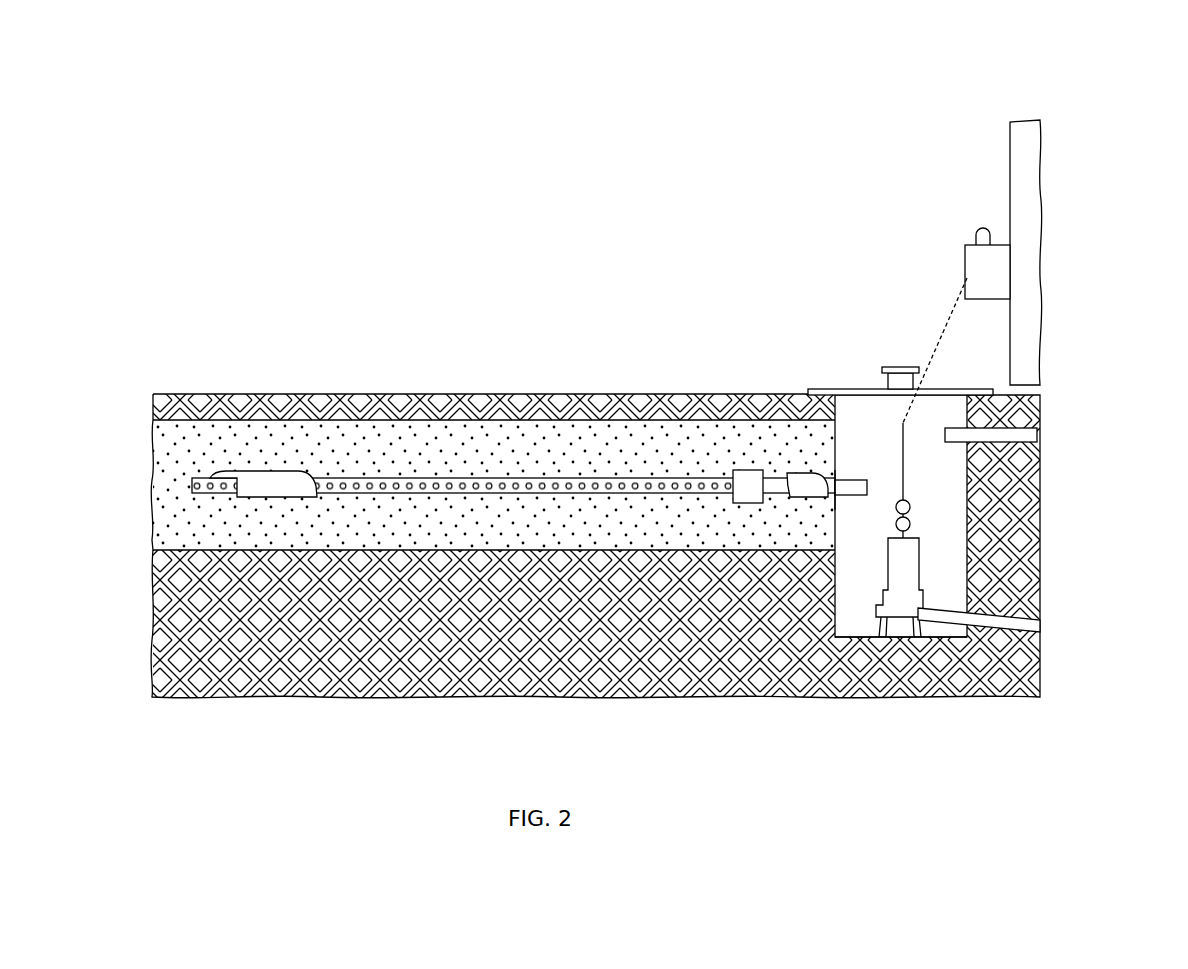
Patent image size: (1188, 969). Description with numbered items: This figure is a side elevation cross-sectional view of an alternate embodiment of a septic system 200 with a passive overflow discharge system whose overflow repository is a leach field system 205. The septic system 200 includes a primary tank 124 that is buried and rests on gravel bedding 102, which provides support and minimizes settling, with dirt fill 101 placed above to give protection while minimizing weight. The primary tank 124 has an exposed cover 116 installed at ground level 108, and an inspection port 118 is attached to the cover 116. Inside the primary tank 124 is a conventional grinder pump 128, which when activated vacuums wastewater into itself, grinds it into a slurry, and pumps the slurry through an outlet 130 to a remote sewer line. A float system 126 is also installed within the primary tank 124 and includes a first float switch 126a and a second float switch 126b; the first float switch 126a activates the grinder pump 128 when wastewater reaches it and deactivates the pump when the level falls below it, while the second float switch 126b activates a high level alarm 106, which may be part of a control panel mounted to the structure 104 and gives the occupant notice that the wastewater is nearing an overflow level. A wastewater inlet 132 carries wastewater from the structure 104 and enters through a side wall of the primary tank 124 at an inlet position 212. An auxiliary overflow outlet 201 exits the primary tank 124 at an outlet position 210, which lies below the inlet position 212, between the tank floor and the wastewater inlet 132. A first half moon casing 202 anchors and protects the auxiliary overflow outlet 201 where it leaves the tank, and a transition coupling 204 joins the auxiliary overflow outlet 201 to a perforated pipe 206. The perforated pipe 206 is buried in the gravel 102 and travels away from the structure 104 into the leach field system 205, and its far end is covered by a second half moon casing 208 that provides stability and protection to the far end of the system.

The septic system 200 is at (365, 172).
The leach field system 205 is at (428, 440).
The ground level 108 is at (547, 393).
The dirt fill 101 is at (155, 405).
The gravel bedding 102 is at (180, 512).
The second half moon casing 208 is at (268, 490).
The perforated pipe 206 is at (356, 487).
The transition coupling 204 is at (756, 490).
The first half moon casing 202 is at (793, 473).
The auxiliary overflow outlet 201 is at (852, 490).
The exposed cover 116 is at (850, 389).
The inspection port 118 is at (900, 367).
The inlet position 212 is at (958, 426).
The structure 104 is at (1030, 180).
The high level alarm 106 is at (998, 258).
The wastewater inlet 132 is at (1043, 433).
The second float switch 126b is at (911, 503).
The float system 126 is at (915, 514).
The first float switch 126a is at (911, 526).
The outlet position 210 is at (838, 500).
The primary tank 124 is at (855, 603).
The grinder pump 128 is at (898, 590).
The outlet 130 is at (948, 614).